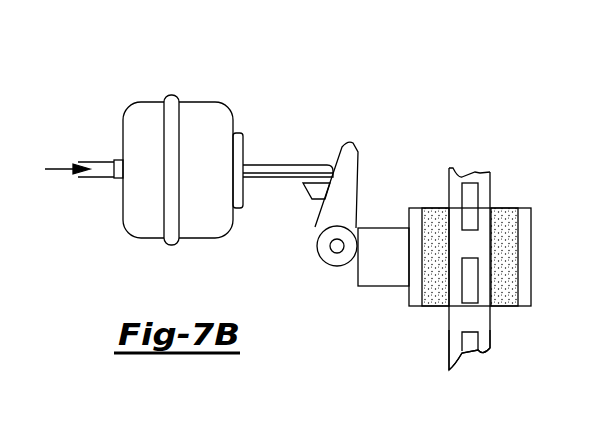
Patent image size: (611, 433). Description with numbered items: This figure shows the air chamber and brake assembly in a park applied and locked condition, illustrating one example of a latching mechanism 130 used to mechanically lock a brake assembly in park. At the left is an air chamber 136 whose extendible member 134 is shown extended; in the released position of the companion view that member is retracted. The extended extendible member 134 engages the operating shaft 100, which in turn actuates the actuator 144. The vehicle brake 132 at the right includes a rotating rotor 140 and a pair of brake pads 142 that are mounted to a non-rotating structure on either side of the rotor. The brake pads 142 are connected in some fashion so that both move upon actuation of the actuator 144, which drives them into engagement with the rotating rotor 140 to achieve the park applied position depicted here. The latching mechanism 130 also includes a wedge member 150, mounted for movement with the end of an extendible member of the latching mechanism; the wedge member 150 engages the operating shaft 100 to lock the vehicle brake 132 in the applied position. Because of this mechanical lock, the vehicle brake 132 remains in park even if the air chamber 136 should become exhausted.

The operating shaft 100 is at (355, 152).
The latching mechanism 130 is at (258, 210).
The vehicle brake 132 is at (470, 143).
The extendible member 134 is at (267, 168).
The air chamber 136 is at (202, 115).
The rotating rotor 140 is at (458, 347).
The brake pads 142 is at (435, 217).
The actuator 144 is at (387, 240).
The wedge member 150 is at (312, 190).